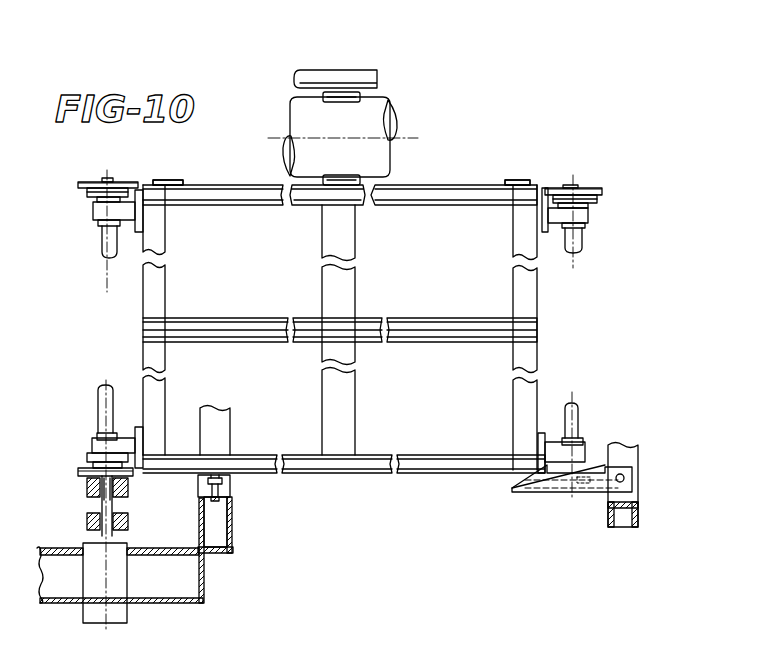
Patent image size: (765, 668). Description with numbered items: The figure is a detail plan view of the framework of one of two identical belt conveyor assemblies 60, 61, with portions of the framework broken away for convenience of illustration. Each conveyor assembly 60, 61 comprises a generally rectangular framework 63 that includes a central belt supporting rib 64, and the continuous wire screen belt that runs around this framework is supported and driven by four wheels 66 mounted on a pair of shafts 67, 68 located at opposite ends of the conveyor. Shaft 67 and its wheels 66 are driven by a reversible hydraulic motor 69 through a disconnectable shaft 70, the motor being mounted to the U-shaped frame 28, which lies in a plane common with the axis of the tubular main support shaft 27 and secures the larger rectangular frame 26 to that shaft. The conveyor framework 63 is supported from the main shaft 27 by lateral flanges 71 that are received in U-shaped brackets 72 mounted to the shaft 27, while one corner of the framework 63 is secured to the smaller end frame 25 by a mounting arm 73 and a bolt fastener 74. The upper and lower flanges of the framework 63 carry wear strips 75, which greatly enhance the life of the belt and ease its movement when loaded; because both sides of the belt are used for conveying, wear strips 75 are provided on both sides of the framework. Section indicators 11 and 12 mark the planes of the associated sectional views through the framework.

The section line 11- 11 is at (465, 185).
The section line 12- 12 is at (343, 66).
The rectangular frame 25 is at (632, 453).
The rectangular frame 26 is at (222, 435).
The tubular main support shaft 27 is at (395, 108).
The U-shaped frame 28 is at (165, 597).
The belt conveyor assembly 60 is at (333, 478).
The belt conveyor assembly 61 is at (374, 66).
The rectangular framework 63 is at (452, 460).
The central belt supporting rib 64 is at (420, 298).
The wheel 66 is at (123, 182).
The shaft 67 is at (100, 403).
The shaft 68 is at (583, 411).
The reversible hydraulic motor 69 is at (93, 608).
The disconnectable shaft 70 is at (95, 502).
The lateral flange 71 is at (177, 175).
The U-shaped bracket 72 is at (352, 157).
The mounting arm 73 is at (562, 492).
The bolt fastener 74 is at (626, 478).
The wear strip 75 is at (143, 303).